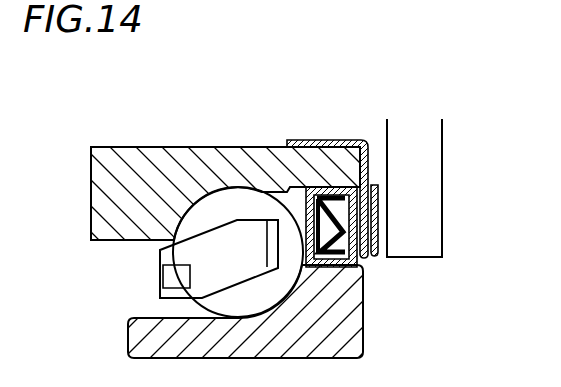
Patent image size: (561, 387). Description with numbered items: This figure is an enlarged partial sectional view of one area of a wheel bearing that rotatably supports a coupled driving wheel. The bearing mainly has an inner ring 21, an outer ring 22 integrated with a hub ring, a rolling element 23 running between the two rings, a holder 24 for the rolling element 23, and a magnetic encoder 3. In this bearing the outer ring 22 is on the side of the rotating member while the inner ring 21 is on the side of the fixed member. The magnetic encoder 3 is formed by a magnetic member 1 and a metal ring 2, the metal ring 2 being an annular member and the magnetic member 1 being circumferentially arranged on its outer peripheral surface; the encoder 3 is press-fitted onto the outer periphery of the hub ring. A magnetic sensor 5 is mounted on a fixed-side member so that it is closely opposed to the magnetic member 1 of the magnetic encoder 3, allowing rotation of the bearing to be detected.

The magnetic member 1 is at (375, 187).
The metal ring 2 is at (287, 140).
The magnetic encoder 3 is at (320, 132).
The magnetic sensor 5 is at (422, 181).
The inner ring 21 is at (350, 313).
The outer ring 22 is at (140, 160).
The rolling element 23 is at (223, 198).
The holder 24 is at (205, 253).